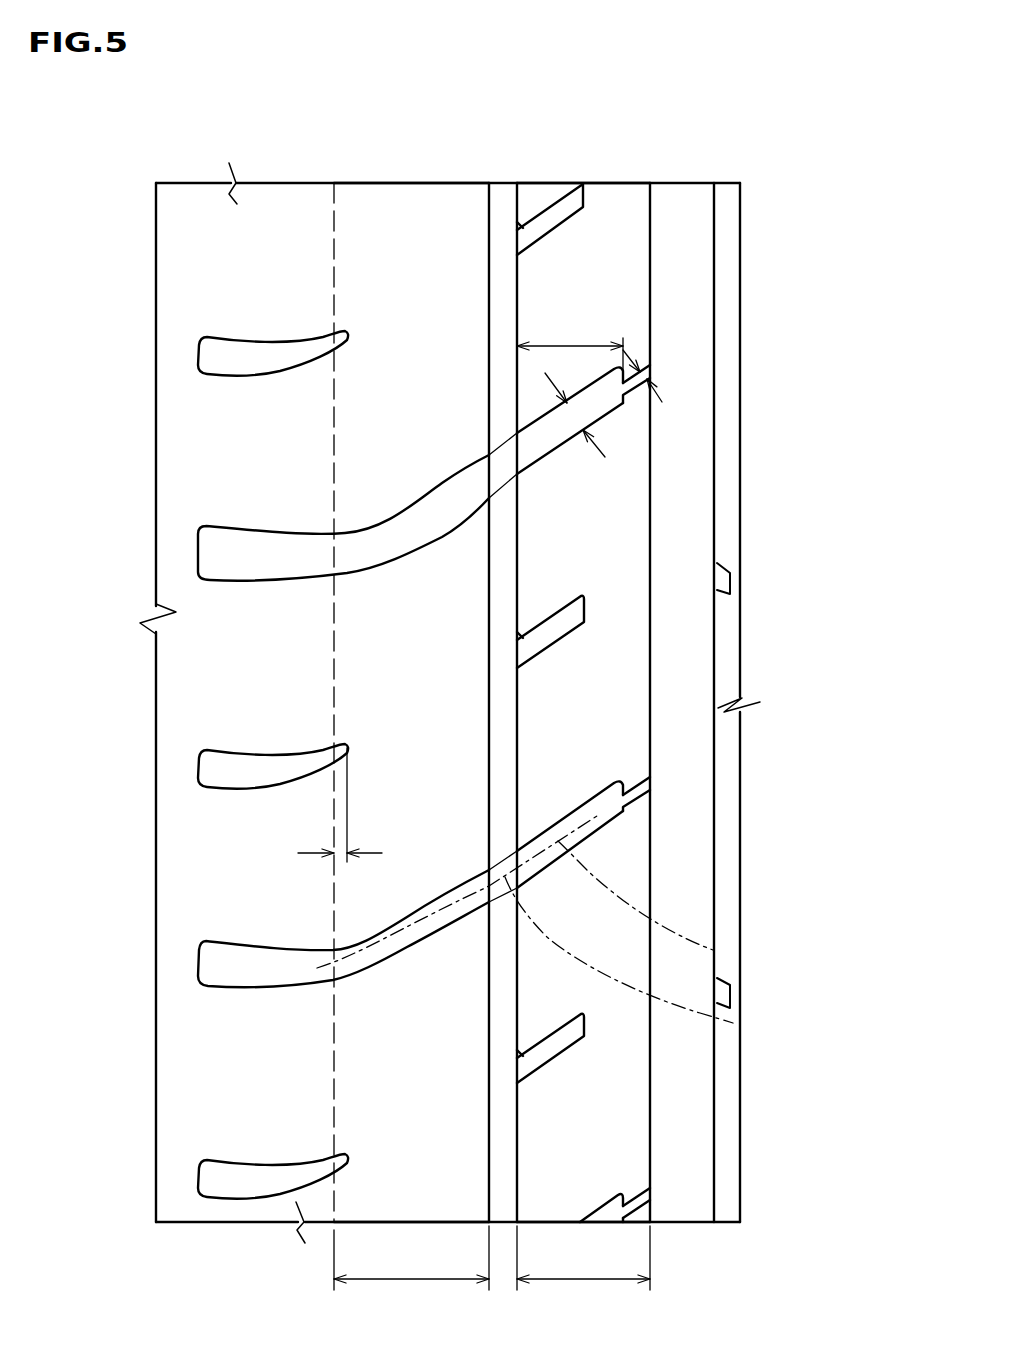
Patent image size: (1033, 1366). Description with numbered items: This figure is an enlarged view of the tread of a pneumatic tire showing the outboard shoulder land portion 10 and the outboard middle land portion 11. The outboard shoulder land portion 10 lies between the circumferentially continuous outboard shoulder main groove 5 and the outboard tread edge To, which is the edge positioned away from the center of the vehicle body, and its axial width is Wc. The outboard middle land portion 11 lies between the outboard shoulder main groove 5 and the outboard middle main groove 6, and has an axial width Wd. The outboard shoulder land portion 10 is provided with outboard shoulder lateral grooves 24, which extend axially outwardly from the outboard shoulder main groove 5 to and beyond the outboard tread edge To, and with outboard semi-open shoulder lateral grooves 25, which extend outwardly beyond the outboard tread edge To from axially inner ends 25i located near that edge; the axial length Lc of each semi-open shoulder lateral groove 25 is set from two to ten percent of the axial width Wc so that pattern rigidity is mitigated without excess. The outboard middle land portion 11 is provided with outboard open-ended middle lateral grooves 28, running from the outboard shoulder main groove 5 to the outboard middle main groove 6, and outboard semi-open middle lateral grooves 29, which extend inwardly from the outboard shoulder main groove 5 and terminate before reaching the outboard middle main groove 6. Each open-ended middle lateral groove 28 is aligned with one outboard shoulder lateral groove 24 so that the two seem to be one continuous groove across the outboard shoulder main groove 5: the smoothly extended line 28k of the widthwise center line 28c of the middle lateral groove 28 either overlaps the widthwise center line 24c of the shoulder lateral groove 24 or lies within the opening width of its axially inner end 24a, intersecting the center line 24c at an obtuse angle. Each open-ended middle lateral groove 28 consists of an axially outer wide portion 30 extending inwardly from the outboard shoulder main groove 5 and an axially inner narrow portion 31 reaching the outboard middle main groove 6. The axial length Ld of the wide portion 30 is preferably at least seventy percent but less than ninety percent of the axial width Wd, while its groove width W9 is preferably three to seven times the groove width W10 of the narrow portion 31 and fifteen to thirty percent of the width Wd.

The outboard tread edge To is at (333, 155).
The outboard shoulder land portion 10 is at (405, 230).
The outboard shoulder main groove 5 is at (504, 228).
The outboard middle land portion 11 is at (619, 226).
The outboard middle main groove 6 is at (683, 226).
The axial length of the axially outer wide portion Ld is at (570, 344).
The groove width of the axially inner narrow portion W10 is at (648, 374).
The groove width of the axially outer wide portion W9 is at (573, 417).
The outboard shoulder lateral groove 24 is at (413, 522).
The axially inner end of the outboard shoulder lateral groove 24a is at (490, 872).
The widthwise center line of the outboard shoulder lateral groove 24c is at (404, 958).
The outboard semi-open shoulder lateral groove 25 is at (343, 764).
The axially inner end of the outboard semi-open shoulder lateral groove 25i is at (347, 745).
The axial length of the outboard semi-open shoulder lateral groove Lc is at (338, 855).
The outboard open-ended middle lateral groove 28 is at (693, 793).
The axially outer wide portion 30 is at (590, 836).
The axially inner narrow portion 31 is at (635, 787).
The widthwise center line of the outboard open-ended middle lateral groove 28c is at (713, 950).
The smoothly extended line of the widthwise center line 28k is at (733, 1023).
The outboard semi-open middle lateral groove 29 is at (558, 1042).
The axial width of the outboard shoulder land portion Wc is at (411, 1271).
The axial width of the outboard middle land portion Wd is at (583, 1271).